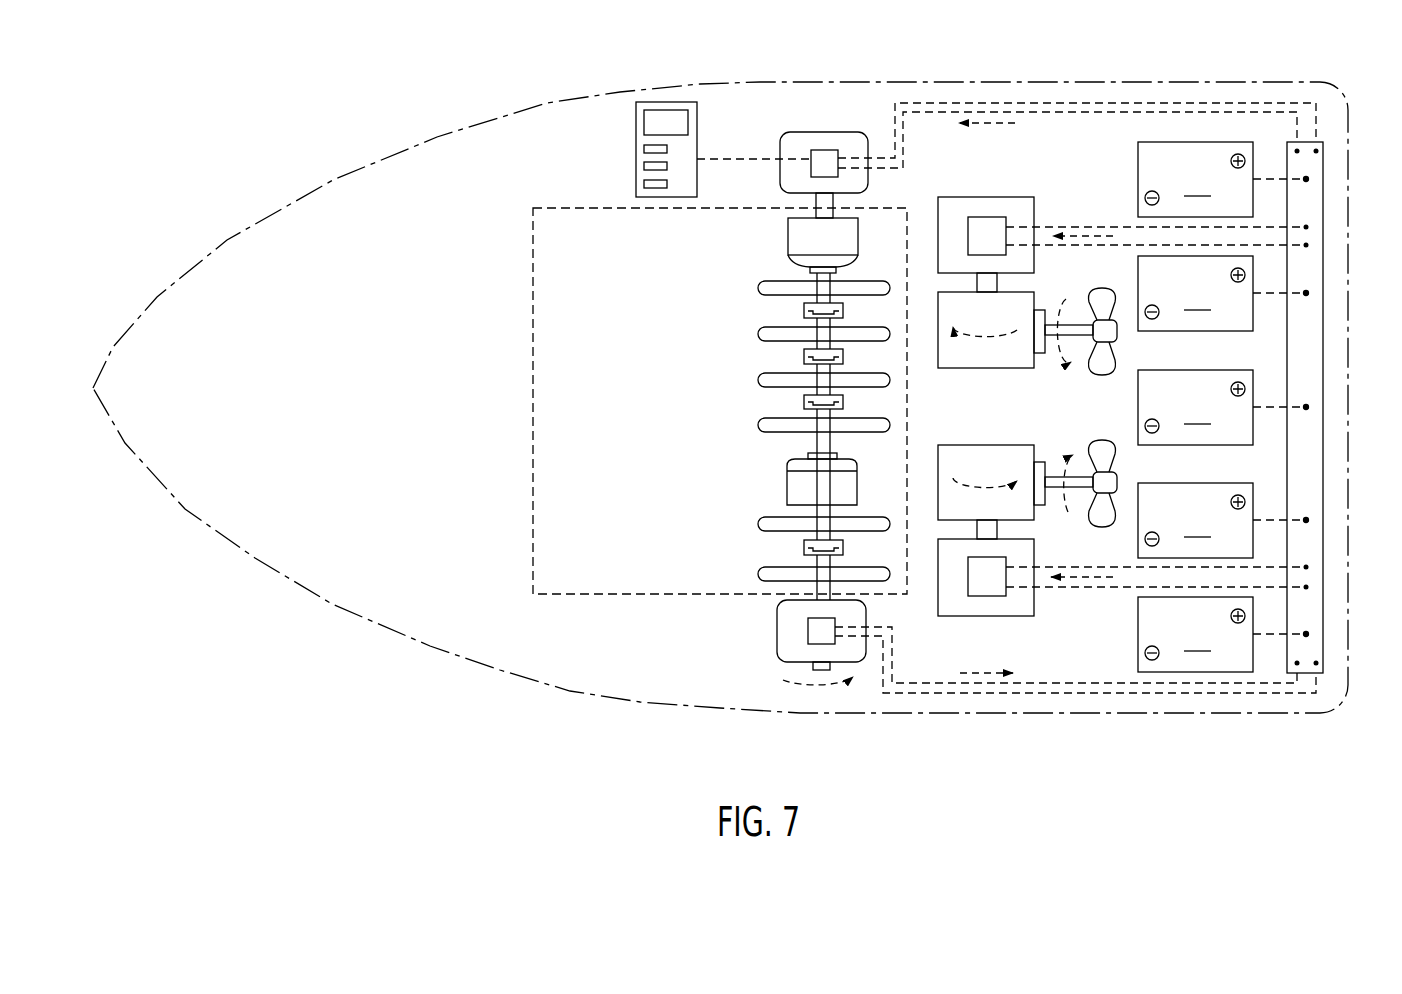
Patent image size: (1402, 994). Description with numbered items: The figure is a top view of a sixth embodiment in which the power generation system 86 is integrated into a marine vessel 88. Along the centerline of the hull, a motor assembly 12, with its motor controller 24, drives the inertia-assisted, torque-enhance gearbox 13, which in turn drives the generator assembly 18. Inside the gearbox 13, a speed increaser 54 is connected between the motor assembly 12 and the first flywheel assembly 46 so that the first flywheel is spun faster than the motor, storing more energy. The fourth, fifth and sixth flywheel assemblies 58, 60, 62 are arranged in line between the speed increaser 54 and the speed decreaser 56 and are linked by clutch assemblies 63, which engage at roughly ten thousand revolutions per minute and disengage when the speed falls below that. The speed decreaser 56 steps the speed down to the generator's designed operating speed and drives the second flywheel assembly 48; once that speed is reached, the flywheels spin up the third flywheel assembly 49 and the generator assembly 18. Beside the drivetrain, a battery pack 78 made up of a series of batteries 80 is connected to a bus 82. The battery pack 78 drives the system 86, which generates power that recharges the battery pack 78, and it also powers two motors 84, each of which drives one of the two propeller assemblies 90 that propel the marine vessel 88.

The motor assembly 12 is at (829, 129).
The inertia-assisted, torque-enhance gearbox 13 is at (531, 304).
The generator assembly 18 is at (776, 631).
The motor controller 24 is at (636, 147).
The first flywheel assembly 46 is at (757, 287).
The second flywheel assembly 48 is at (757, 524).
The third flywheel assembly 49 is at (757, 574).
The speed increaser 54 is at (786, 237).
The speed decreaser 56 is at (786, 483).
The fourth flywheel assembly 58 is at (757, 334).
The fifth flywheel assembly 60 is at (757, 379).
The sixth flywheel assembly 62 is at (757, 425).
The clutch assemblies 63 is at (803, 310).
The battery pack 78 is at (1266, 352).
The batteries 80 is at (1223, 407).
The bus 82 is at (1324, 328).
The motors 84 is at (1022, 203).
The system 86 is at (621, 403).
The marine vessel 88 is at (495, 682).
The propeller assemblies 90 is at (1050, 369).